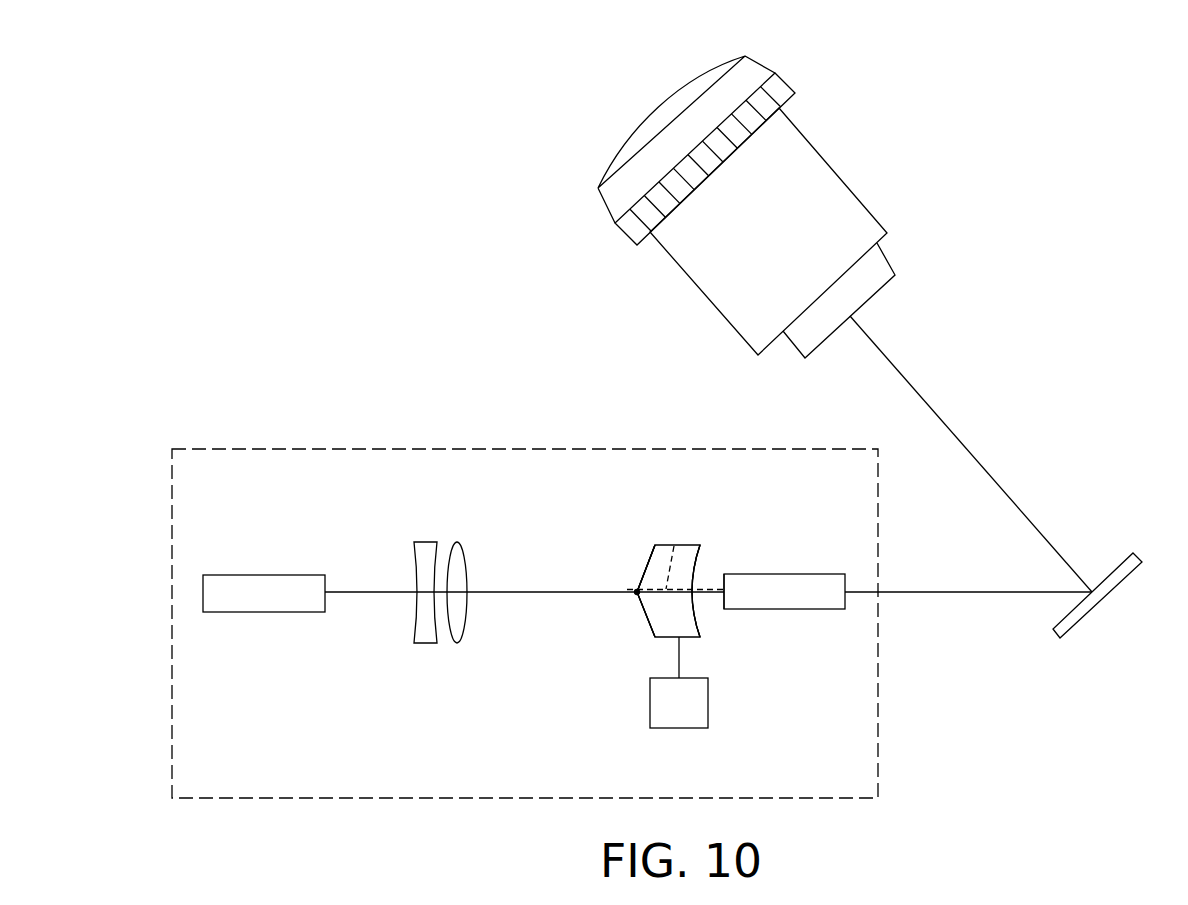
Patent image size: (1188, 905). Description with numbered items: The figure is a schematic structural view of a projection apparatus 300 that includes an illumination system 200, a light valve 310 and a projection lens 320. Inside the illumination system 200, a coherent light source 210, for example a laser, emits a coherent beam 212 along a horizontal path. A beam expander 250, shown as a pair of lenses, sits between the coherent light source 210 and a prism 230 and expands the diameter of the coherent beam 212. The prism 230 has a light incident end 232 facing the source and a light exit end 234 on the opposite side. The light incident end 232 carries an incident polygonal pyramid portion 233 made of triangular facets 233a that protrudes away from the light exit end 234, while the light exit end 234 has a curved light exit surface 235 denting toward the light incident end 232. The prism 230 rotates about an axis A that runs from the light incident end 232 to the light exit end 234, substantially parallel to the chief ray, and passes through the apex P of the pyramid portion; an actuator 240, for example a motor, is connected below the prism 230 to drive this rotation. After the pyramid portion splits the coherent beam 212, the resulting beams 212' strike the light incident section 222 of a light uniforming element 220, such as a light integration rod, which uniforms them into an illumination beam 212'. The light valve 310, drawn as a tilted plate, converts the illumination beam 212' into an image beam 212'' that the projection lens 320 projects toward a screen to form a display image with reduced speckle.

The illumination system 200 is at (505, 448).
The coherent light source 210 is at (266, 598).
The coherent beam 212 is at (524, 637).
The illumination beam 212' is at (968, 638).
The image beam 212'' is at (971, 454).
The light uniforming element 220 is at (812, 597).
The light incident section 222 is at (723, 600).
The prism 230 is at (676, 540).
The light incident end 232 is at (645, 571).
The incident polygonal pyramid portion 233 is at (588, 678).
The triangular facets 233a is at (640, 574).
The light exit end 234 is at (695, 559).
The curved light exit surface 235 is at (697, 570).
The actuator 240 is at (683, 715).
The beam expander 250 is at (467, 650).
The projection apparatus 300 is at (1087, 824).
The light valve 310 is at (1082, 610).
The projection lens 320 is at (812, 205).
The axis A is at (657, 538).
The apex P is at (637, 592).